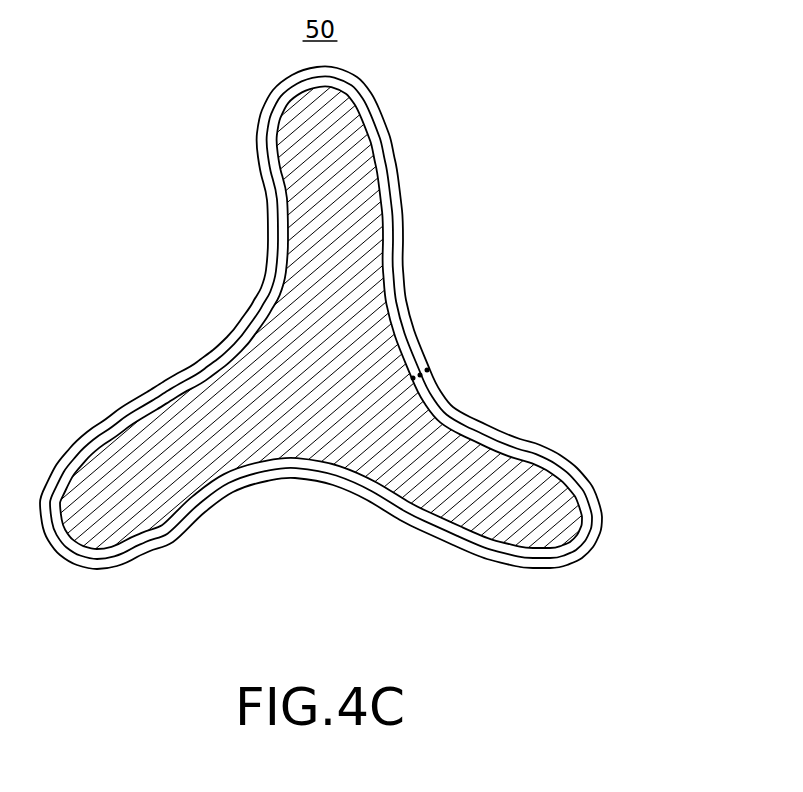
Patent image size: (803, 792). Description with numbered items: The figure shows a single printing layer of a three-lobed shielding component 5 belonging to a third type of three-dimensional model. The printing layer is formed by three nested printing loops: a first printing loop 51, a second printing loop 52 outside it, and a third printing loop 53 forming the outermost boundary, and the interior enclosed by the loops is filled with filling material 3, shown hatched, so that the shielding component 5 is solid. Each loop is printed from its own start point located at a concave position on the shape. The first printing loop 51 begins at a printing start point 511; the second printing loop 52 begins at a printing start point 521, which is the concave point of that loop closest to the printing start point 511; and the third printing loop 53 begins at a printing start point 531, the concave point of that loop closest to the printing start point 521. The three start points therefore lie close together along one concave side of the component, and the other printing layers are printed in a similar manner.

The shielding component 5 is at (401, 396).
The filling material 3 is at (537, 513).
The first printing loop 51 is at (583, 482).
The second printing loop 52 is at (550, 450).
The third printing loop 53 is at (600, 517).
The printing start point 511 is at (413, 378).
The printing start point 521 is at (420, 375).
The printing start point 531 is at (427, 370).